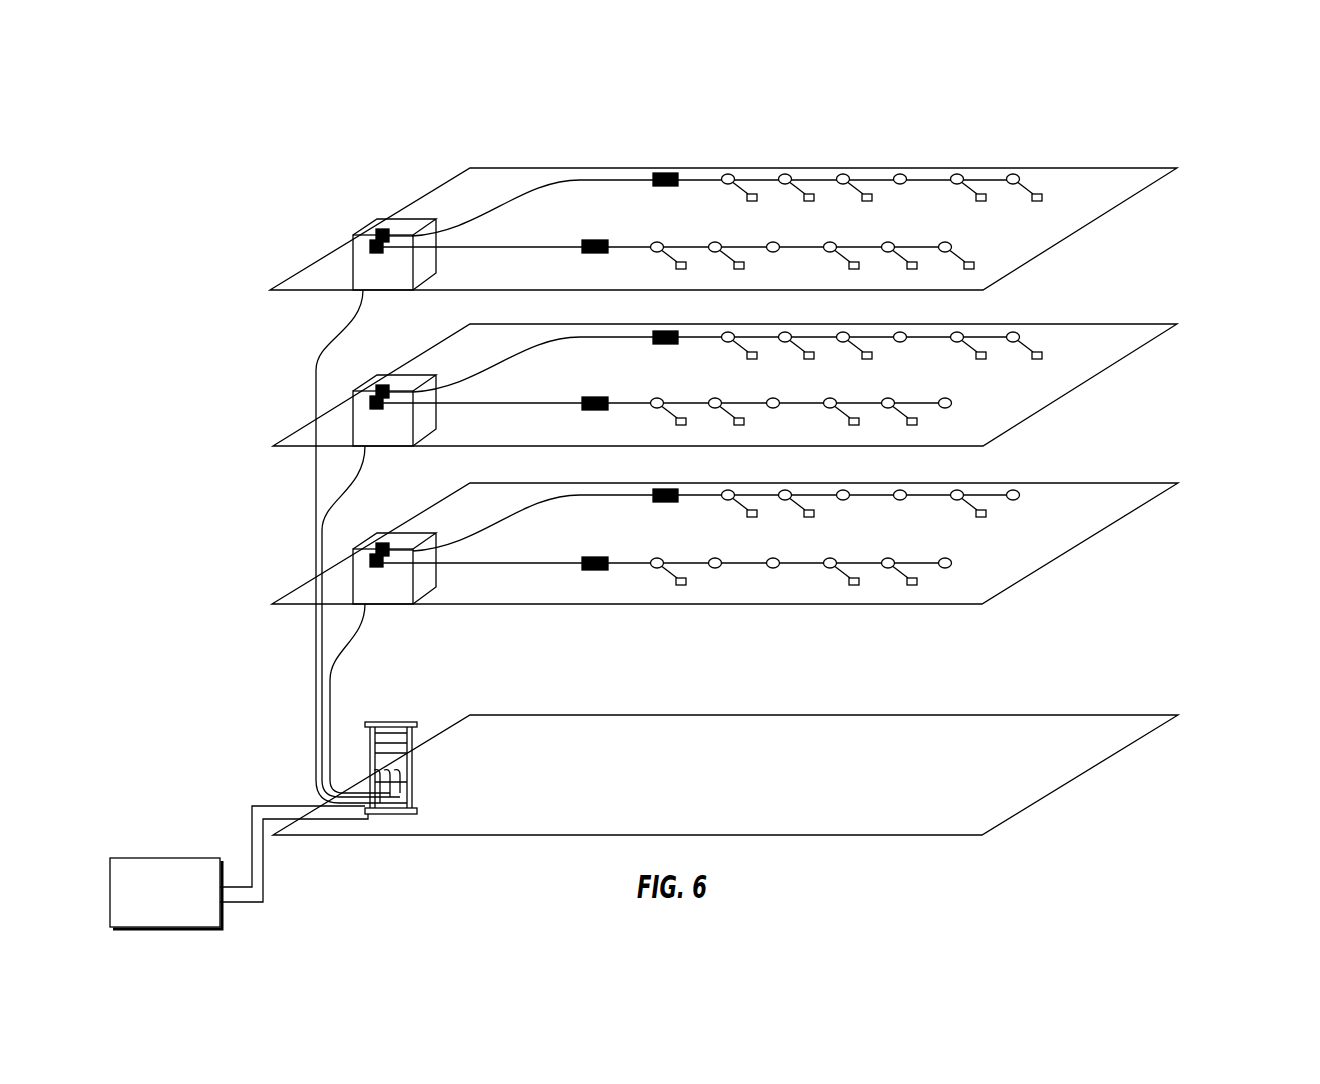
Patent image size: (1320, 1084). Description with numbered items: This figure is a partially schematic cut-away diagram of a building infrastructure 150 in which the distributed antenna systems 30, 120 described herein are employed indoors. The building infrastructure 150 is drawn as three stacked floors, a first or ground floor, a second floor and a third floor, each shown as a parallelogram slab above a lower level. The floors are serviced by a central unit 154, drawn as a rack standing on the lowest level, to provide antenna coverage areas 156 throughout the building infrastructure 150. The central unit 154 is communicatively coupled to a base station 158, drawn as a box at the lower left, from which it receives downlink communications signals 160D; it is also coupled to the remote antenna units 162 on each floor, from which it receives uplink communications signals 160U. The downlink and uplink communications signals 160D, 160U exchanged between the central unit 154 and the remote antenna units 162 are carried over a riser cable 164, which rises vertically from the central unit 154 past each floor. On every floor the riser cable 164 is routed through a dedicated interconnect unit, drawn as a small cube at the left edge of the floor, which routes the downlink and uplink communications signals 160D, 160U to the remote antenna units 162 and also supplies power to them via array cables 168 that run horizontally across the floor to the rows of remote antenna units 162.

The distributed antenna system (DAS) 30 is at (863, 110).
The distributed antenna system (DAS) 120 is at (701, 501).
The building infrastructure 150 is at (1123, 607).
The antenna coverage areas 156 is at (948, 310).
The remote antenna units 162 is at (983, 195).
The array cables 168 is at (617, 178).
The riser cable 164 is at (315, 697).
The central unit 154 is at (417, 772).
The uplink communications signals 160U is at (247, 800).
The downlink communications signals 160D is at (268, 902).
The base station 158 is at (183, 906).